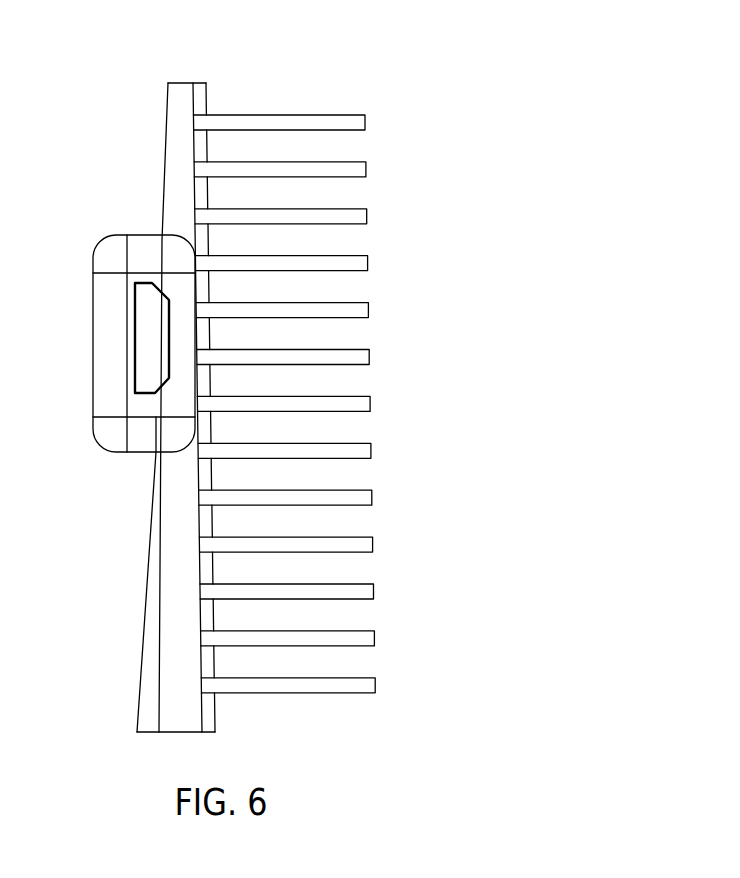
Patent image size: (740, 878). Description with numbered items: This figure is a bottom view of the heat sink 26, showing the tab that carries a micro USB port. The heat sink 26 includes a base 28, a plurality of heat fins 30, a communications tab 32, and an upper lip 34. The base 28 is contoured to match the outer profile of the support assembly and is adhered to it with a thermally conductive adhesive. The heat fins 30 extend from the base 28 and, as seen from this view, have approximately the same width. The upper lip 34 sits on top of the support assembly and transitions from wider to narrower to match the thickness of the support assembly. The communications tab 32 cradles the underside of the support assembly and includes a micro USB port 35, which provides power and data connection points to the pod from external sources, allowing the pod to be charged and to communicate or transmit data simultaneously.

The heat sink 26 is at (423, 239).
The base 28 is at (172, 178).
The heat fins 30 is at (343, 87).
The communications tab 32 is at (103, 462).
The upper lip 34 is at (146, 703).
The micro USB port 35 is at (139, 352).